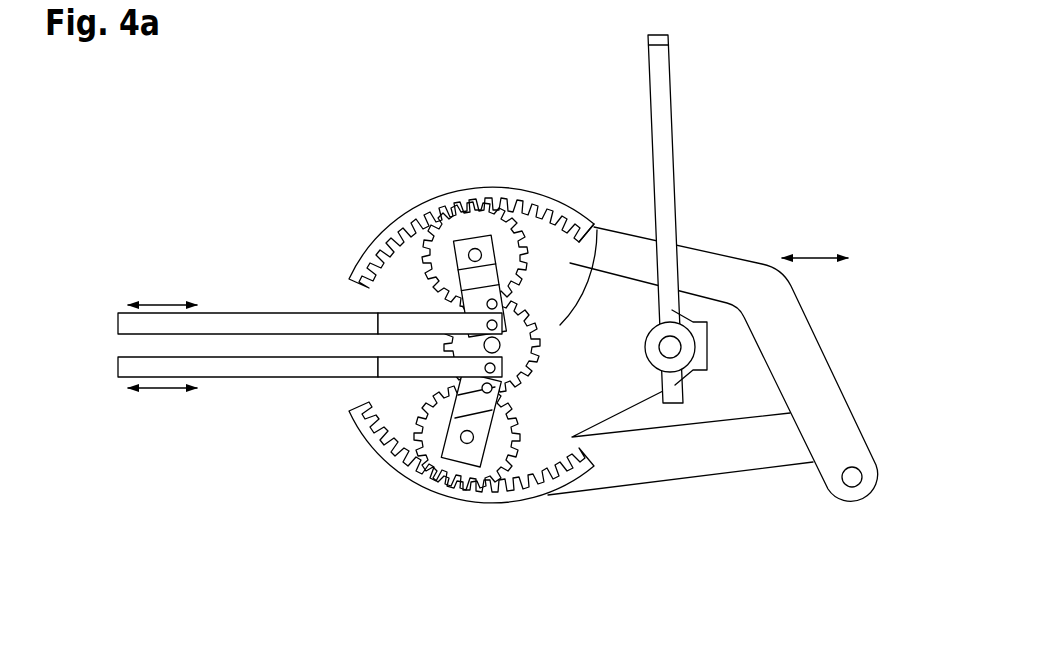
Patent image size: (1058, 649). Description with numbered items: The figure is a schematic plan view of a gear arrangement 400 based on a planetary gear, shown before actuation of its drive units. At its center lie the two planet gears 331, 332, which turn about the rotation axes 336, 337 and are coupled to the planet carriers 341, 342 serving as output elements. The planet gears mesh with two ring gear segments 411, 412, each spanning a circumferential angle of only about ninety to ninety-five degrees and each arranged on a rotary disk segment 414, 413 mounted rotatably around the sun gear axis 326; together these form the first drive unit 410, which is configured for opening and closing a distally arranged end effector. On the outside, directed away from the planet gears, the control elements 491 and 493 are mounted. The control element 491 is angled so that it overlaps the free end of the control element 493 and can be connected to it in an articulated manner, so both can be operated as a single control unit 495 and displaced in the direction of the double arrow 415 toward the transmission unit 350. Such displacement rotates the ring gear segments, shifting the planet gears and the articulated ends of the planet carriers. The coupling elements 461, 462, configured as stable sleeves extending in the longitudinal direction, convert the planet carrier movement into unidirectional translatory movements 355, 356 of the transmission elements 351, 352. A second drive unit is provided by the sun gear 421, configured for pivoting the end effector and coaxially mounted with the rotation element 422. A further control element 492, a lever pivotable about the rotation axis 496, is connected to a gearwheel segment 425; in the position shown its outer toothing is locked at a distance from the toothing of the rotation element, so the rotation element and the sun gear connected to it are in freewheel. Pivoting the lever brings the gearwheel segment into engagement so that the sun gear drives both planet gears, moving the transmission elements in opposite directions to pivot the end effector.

The gear arrangement 400 is at (380, 112).
The sun gear axis 326 is at (520, 333).
The planet gear 331 is at (518, 222).
The planet gear 332 is at (402, 483).
The rotation axis 336 is at (467, 437).
The rotation axis 337 is at (475, 248).
The planet carrier 341 is at (442, 225).
The planet carrier 342 is at (440, 458).
The transmission unit 350 is at (287, 349).
The transmission element 351 is at (310, 275).
The transmission element 352 is at (310, 420).
The translatory movement 355 is at (163, 300).
The translatory movement 356 is at (163, 392).
The first drive unit 410 is at (403, 362).
The ring gear segment 411 is at (403, 226).
The ring gear segment 412 is at (403, 481).
The rotary disk segment 413 is at (530, 448).
The rotary disk segment 414 is at (413, 270).
The double arrow 415 is at (822, 258).
The sun gear 421 is at (576, 220).
The rotation element 422 is at (598, 231).
The gearwheel segment 425 is at (600, 367).
The coupling element 461 is at (385, 314).
The coupling element 462 is at (385, 377).
The control element 491 is at (780, 327).
The control element 492 is at (660, 78).
The control element 493 is at (682, 462).
The control unit 495 is at (866, 418).
The rotation axis 496 is at (672, 347).